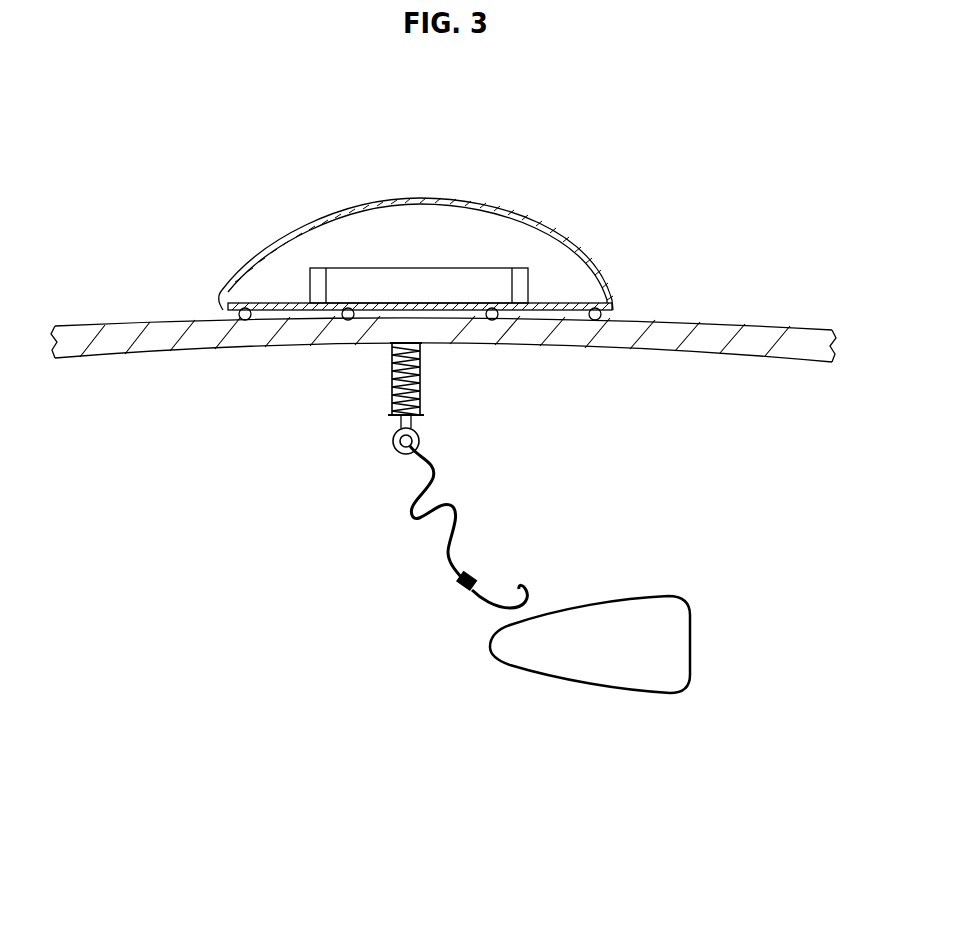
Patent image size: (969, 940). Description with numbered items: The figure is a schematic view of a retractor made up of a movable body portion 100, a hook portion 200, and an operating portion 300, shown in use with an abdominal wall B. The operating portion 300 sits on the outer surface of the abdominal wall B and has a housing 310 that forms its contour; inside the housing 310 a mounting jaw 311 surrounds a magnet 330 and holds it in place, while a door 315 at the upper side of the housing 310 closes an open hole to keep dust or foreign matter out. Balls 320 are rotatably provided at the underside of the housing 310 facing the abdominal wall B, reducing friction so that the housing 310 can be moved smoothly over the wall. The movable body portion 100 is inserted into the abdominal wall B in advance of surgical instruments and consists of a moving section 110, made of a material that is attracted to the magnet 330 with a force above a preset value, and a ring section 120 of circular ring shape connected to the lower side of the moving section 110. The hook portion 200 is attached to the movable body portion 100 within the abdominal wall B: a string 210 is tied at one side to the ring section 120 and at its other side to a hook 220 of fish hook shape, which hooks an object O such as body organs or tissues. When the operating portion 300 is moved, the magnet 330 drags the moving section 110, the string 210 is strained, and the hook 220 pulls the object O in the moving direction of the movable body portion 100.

The operating portion 300 is at (590, 210).
The housing 310 is at (473, 214).
The mounting jaw 311 is at (317, 287).
The door 315 is at (470, 203).
The balls 320 is at (612, 307).
The magnet 330 is at (373, 287).
The movable body portion 100 is at (286, 398).
The moving section 110 is at (390, 372).
The ring section 120 is at (393, 432).
The hook portion 200 is at (440, 631).
The string 210 is at (432, 518).
The hook 220 is at (490, 600).
The abdominal wall B is at (750, 345).
The object O is at (603, 668).